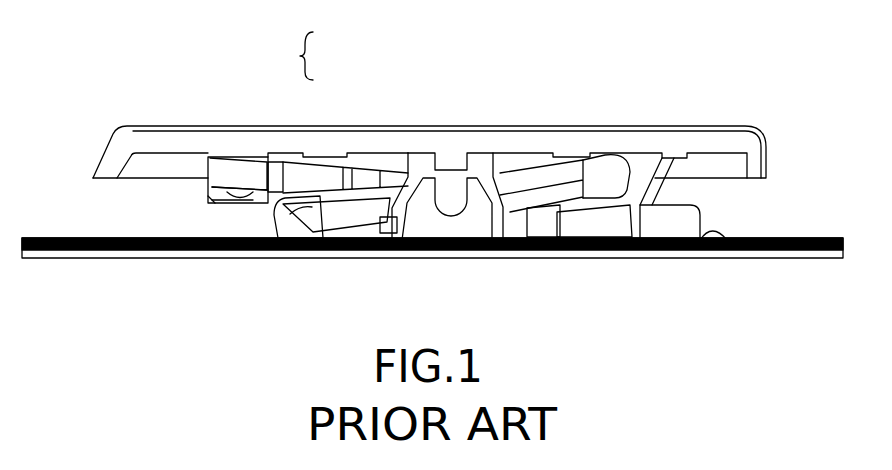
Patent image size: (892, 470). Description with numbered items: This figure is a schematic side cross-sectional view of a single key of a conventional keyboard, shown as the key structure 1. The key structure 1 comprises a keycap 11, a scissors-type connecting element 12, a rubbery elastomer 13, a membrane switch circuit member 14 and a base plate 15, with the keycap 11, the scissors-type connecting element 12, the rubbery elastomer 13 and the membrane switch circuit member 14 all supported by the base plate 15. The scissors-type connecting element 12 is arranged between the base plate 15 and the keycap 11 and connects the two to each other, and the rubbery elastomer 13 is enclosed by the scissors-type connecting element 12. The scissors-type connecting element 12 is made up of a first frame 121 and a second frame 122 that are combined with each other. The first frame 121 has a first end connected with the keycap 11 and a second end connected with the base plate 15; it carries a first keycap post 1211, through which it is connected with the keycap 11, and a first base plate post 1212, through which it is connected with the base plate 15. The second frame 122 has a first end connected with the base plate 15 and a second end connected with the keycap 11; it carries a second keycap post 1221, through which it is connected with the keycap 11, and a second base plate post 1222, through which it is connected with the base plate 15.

The key structure 1 is at (625, 62).
The keycap 11 is at (388, 138).
The scissors-type connecting element 12 is at (223, 172).
The first frame 121 is at (467, 196).
The first keycap post 1211 is at (608, 167).
The first base plate post 1212 is at (282, 218).
The second frame 122 is at (457, 241).
The second keycap post 1221 is at (203, 202).
The second base plate post 1222 is at (685, 227).
The rubbery elastomer 13 is at (478, 160).
The membrane switch circuit member 14 is at (698, 245).
The base plate 15 is at (633, 252).